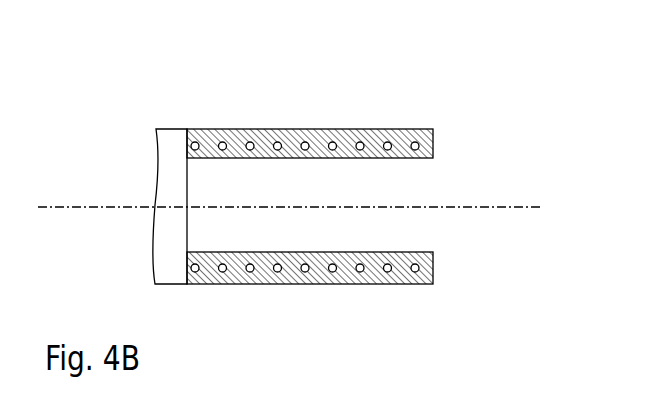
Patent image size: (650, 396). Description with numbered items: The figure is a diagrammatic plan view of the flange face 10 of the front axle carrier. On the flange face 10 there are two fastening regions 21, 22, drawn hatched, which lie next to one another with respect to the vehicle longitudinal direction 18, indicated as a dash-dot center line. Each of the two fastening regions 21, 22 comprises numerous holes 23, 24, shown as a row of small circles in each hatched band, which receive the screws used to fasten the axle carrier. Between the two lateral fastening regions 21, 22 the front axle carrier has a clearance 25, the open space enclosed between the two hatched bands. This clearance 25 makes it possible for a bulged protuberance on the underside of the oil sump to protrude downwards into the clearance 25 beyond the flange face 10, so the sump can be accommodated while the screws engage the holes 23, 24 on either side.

The flange face 10 is at (172, 138).
The vehicle longitudinal direction 18 is at (100, 205).
The first fastening region 21 is at (322, 133).
The second fastening region 22 is at (290, 280).
The holes 23 is at (249, 142).
The holes 24 is at (362, 272).
The clearance 25 is at (380, 192).